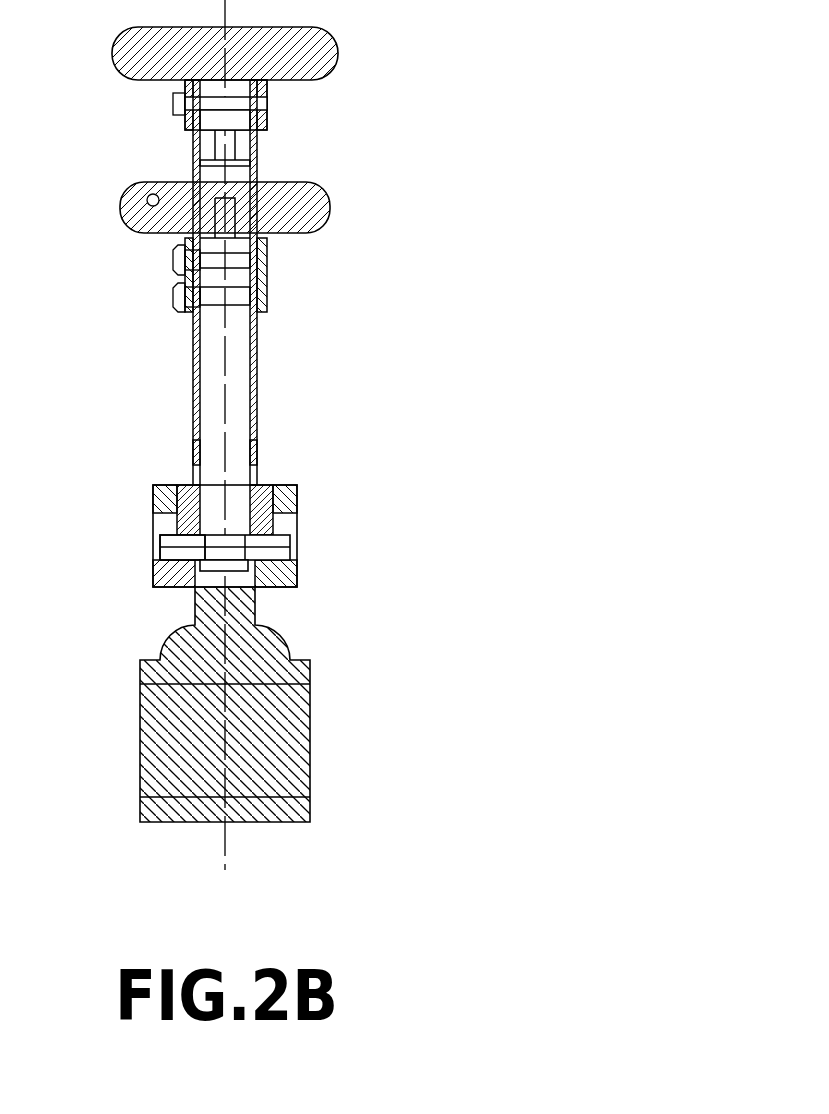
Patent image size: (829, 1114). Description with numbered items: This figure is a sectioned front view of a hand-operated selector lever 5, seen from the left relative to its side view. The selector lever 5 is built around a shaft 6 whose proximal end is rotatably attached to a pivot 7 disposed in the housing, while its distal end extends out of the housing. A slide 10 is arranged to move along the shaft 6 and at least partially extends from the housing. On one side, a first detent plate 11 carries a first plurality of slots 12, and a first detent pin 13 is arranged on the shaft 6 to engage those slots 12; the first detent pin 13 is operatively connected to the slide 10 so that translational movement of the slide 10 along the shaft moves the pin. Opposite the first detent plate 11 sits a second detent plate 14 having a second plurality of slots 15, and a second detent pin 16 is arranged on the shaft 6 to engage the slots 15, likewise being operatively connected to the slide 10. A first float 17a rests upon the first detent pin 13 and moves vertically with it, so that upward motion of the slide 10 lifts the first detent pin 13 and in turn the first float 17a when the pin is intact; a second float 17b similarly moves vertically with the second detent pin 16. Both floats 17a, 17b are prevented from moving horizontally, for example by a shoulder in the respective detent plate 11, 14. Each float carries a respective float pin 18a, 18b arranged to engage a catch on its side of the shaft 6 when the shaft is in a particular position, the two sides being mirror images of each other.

The selector lever 5 is at (410, 133).
The shaft 6 is at (253, 385).
The pivot 7 is at (310, 748).
The slide 10 is at (267, 273).
The first detent plate 11 is at (297, 492).
The slots 12 is at (297, 540).
The first detent pin 13 is at (282, 557).
The second detent plate 14 is at (160, 492).
The second plurality of slots 15 is at (162, 530).
The second detent pin 16 is at (160, 555).
The first float 17a is at (262, 488).
The second float 17b is at (186, 488).
The first float pin 18a is at (247, 490).
The second float pin 18b is at (197, 490).